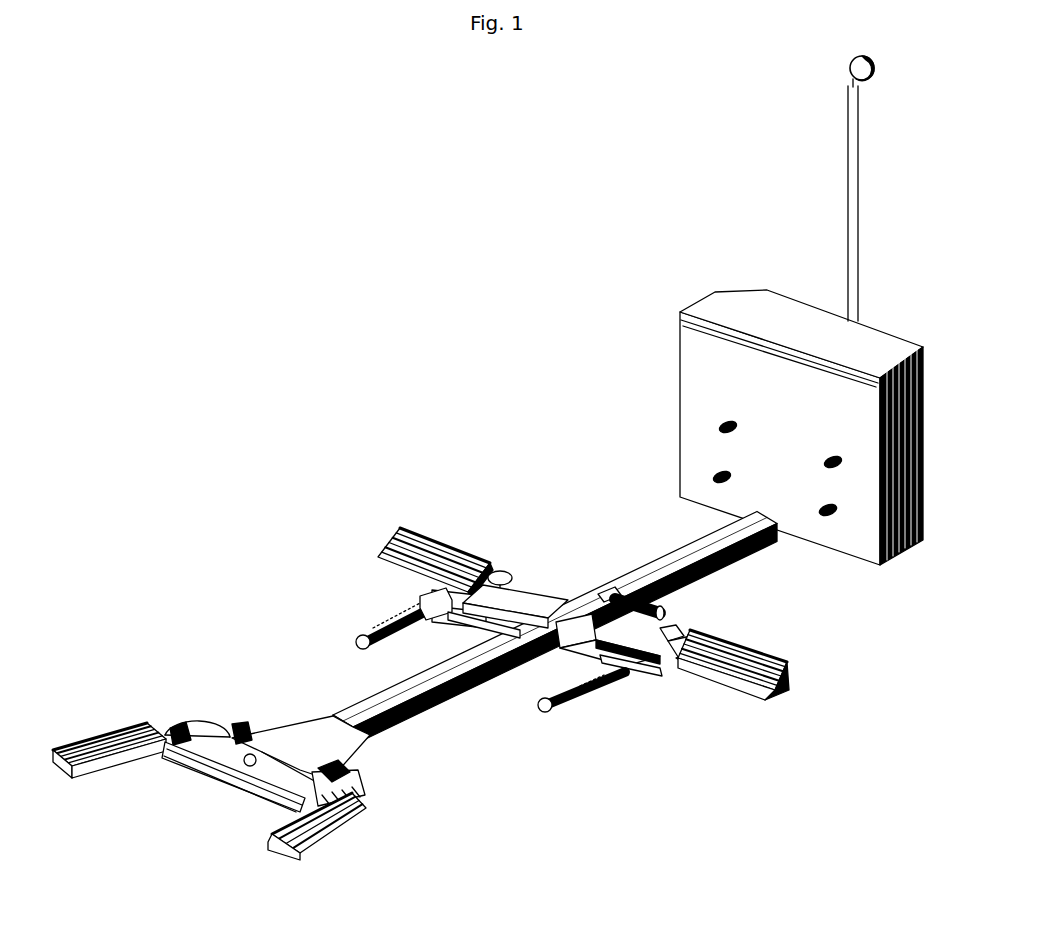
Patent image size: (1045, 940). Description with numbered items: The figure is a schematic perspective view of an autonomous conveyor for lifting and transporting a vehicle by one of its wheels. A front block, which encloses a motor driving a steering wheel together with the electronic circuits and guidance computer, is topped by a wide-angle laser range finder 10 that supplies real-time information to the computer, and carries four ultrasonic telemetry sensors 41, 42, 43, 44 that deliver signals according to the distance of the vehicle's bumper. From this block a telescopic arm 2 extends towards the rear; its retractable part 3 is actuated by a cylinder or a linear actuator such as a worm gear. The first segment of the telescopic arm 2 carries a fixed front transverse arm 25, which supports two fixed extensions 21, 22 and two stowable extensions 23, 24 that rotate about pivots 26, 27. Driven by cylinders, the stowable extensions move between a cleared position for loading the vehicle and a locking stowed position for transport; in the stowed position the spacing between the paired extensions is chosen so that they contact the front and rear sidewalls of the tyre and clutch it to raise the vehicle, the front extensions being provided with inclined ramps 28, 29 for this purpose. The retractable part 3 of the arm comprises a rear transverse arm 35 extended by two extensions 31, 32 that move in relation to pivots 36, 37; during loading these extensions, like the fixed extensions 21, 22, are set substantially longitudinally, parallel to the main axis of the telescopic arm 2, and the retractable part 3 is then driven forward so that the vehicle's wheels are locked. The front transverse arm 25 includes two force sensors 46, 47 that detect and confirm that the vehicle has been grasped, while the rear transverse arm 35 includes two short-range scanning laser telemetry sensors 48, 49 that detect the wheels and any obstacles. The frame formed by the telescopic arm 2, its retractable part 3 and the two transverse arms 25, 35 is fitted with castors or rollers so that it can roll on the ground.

The telescopic arm 2 is at (630, 517).
The retractable part 3 is at (287, 715).
The wide-angle laser range finder 10 is at (768, 188).
The fixed extension 21 is at (805, 712).
The fixed extension 22 is at (394, 527).
The stowable extension 23 is at (581, 753).
The stowable extension 24 is at (326, 607).
The front transverse arm 25 is at (550, 559).
The pivot 26 is at (407, 597).
The pivot 27 is at (634, 689).
The inclined ramp 28 is at (387, 560).
The inclined ramp 29 is at (726, 707).
The extension 31 is at (379, 854).
The extension 32 is at (90, 718).
The rear transverse arm 35 is at (228, 809).
The pivot 36 is at (155, 692).
The pivot 37 is at (393, 789).
The ultrasonic telemetry sensor 41 is at (850, 554).
The ultrasonic telemetry sensor 42 is at (811, 524).
The ultrasonic telemetry sensor 43 is at (668, 405).
The ultrasonic telemetry sensor 44 is at (661, 459).
The force sensor 46 is at (493, 523).
The force sensor 47 is at (678, 620).
The short-range scanning laser telemetry sensor 48 is at (233, 717).
The short-range scanning laser telemetry sensor 49 is at (372, 768).